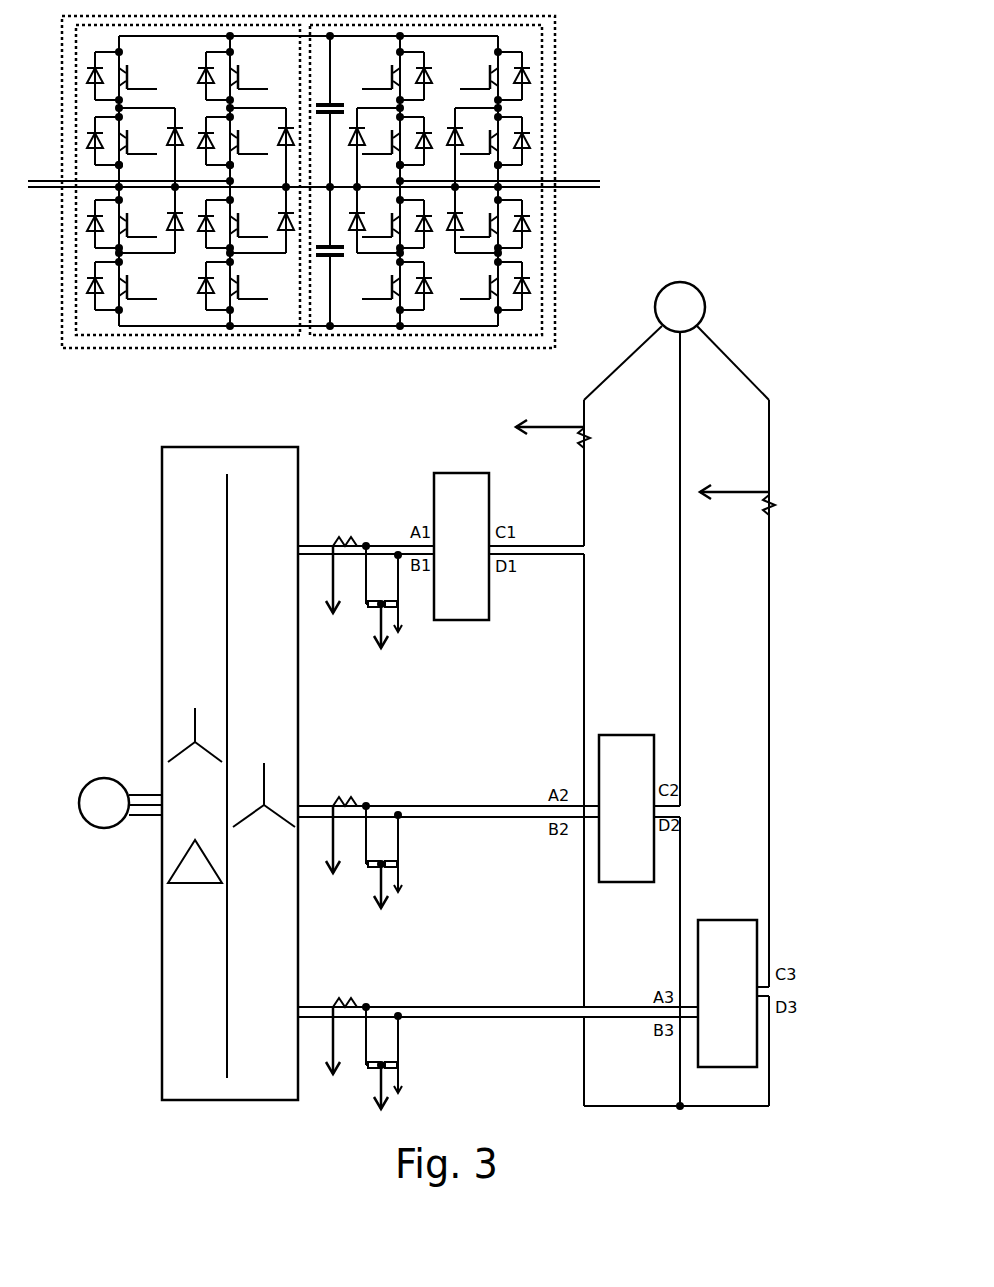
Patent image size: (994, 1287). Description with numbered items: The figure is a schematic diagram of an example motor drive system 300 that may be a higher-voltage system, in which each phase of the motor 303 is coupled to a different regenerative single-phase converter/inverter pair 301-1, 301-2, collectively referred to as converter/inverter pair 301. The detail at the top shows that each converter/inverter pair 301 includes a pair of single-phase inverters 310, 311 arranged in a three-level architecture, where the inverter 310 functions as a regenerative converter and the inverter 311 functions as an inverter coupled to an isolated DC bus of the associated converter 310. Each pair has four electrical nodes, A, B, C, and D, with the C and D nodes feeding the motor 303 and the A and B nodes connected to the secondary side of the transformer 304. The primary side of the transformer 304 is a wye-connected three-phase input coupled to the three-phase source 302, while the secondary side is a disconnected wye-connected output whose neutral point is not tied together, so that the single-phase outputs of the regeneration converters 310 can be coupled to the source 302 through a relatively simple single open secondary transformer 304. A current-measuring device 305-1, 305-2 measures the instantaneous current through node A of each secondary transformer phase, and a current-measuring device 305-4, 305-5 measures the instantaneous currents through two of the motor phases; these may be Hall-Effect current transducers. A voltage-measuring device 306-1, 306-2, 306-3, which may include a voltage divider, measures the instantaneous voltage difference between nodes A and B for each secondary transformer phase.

The motor drive system 300 is at (755, 244).
The converter/inverter pair 301 is at (102, 349).
The single-phase inverter 310 is at (180, 337).
The single-phase inverter 311 is at (375, 337).
The three-phase source 302 is at (104, 778).
The motor 303 is at (684, 283).
The transformer 304 is at (226, 447).
The converter/inverter pair 301-1 is at (455, 473).
The converter/inverter pair 301-2 is at (628, 735).
The current-measuring device 305-1 is at (347, 540).
The current-measuring device 305-2 is at (345, 800).
The current-measuring device 305-4 is at (593, 440).
The current-measuring device 305-5 is at (778, 505).
The voltage-measuring device 306-1 is at (372, 612).
The voltage-measuring device 306-2 is at (404, 868).
The voltage-measuring device 306-3 is at (404, 1070).